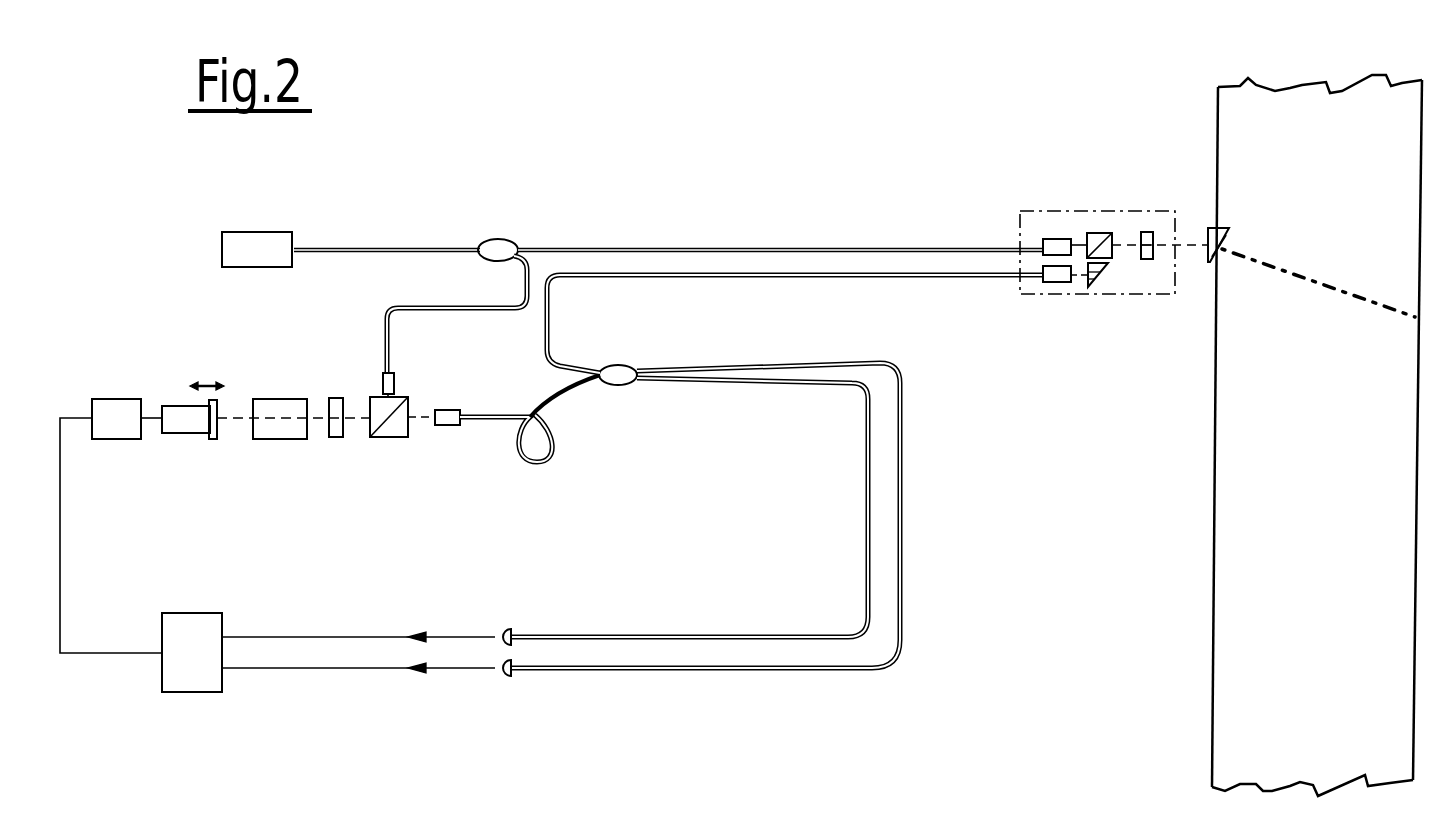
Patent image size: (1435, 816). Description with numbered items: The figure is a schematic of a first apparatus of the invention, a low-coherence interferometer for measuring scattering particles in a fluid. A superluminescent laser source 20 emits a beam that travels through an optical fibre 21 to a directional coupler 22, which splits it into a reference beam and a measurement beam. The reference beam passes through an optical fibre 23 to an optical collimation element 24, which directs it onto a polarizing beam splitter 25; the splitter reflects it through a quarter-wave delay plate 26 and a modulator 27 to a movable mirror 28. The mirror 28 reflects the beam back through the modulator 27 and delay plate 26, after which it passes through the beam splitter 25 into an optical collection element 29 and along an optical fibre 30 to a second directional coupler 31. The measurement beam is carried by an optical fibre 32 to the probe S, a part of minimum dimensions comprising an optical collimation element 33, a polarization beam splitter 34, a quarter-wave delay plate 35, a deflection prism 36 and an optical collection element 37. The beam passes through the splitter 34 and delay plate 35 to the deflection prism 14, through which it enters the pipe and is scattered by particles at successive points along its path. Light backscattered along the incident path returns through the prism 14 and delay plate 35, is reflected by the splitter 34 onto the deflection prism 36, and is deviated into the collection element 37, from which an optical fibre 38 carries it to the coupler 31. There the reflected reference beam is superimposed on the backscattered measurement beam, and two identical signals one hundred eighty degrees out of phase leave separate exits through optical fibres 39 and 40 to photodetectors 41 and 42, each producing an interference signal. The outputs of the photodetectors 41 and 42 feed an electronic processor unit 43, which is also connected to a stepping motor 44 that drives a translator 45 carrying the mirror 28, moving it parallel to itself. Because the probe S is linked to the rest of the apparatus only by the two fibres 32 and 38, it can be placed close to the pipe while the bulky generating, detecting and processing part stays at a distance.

The deflection prism 14 is at (1219, 236).
The superluminescent laser source 20 is at (259, 242).
The optical fibre 21 is at (361, 247).
The directional coupler 22 is at (501, 247).
The optical fibre 23 is at (449, 310).
The optical collimation element 24 is at (395, 385).
The polarizing beam splitter 25 is at (398, 433).
The quarter-wave delay plate 26 is at (337, 402).
The modulator 27 is at (288, 410).
The movable mirror 28 is at (217, 404).
The optical collection element 29 is at (452, 426).
The optical fibre 30 is at (553, 452).
The directional coupler 31 is at (618, 380).
The optical fibre 32 is at (661, 247).
The optical collimation element 33 is at (1058, 240).
The polarization beam splitter 34 is at (1099, 240).
The quarter-wave delay plate 35 is at (1148, 231).
The deflection prism 36 is at (1093, 288).
The optical collection element 37 is at (1058, 283).
The optical fibre 38 is at (912, 278).
The optical fibre 39 is at (903, 483).
The optical fibre 40 is at (866, 500).
The photodetector 41 is at (504, 676).
The photodetector 42 is at (504, 630).
The electronic processor unit 43 is at (193, 620).
The stepping motor 44 is at (112, 410).
The translator 45 is at (175, 410).
The probe S is at (1031, 217).